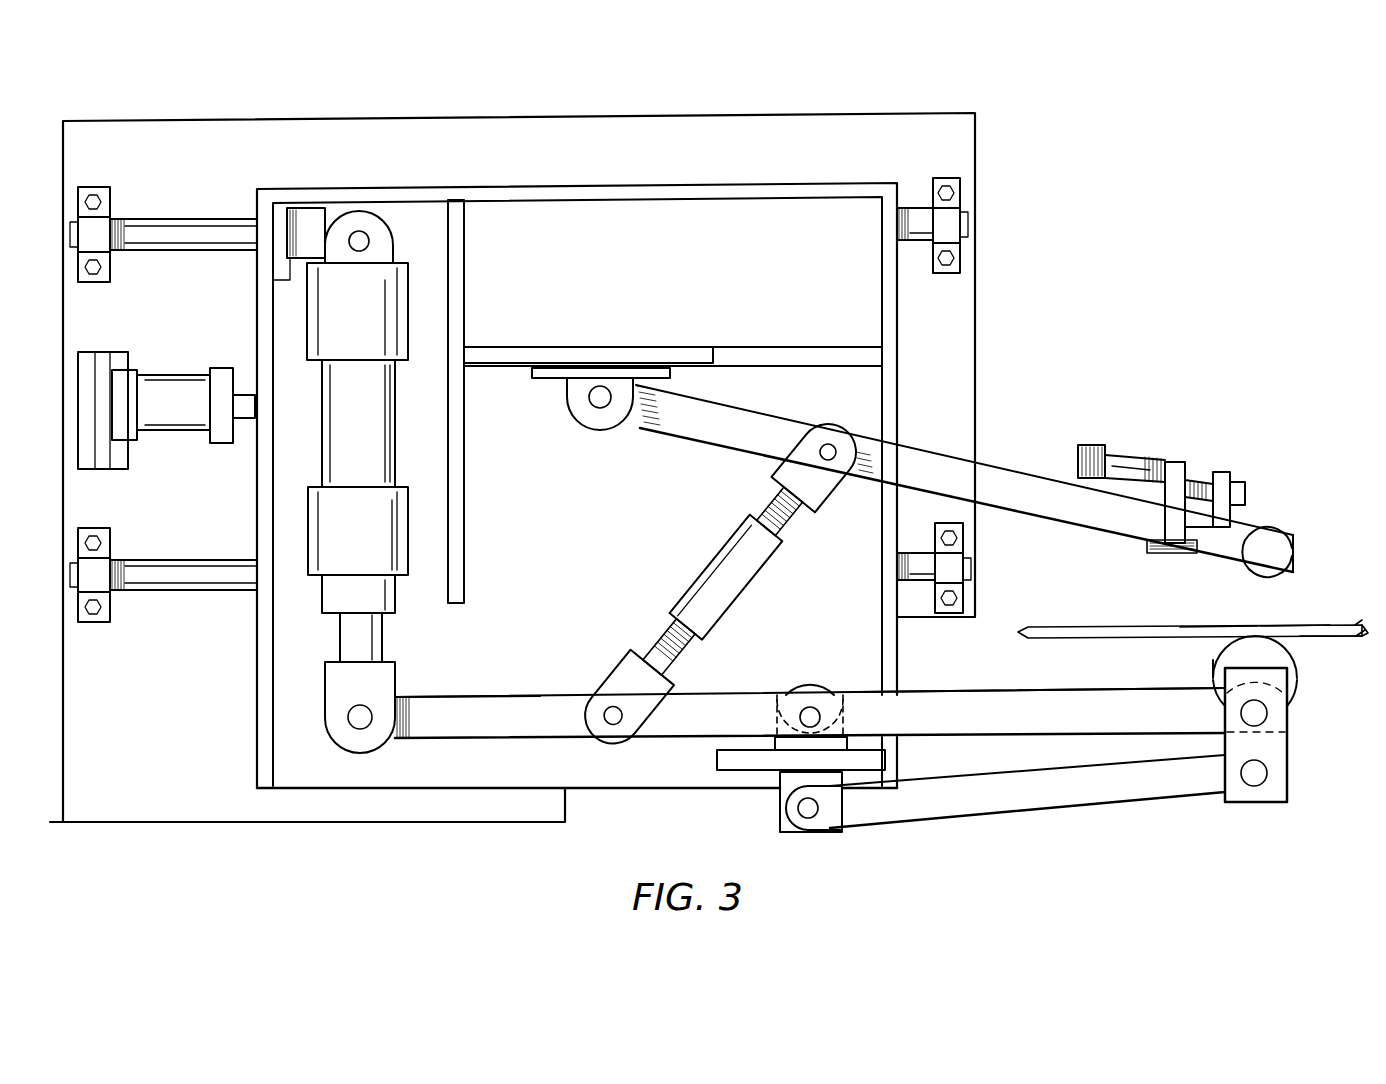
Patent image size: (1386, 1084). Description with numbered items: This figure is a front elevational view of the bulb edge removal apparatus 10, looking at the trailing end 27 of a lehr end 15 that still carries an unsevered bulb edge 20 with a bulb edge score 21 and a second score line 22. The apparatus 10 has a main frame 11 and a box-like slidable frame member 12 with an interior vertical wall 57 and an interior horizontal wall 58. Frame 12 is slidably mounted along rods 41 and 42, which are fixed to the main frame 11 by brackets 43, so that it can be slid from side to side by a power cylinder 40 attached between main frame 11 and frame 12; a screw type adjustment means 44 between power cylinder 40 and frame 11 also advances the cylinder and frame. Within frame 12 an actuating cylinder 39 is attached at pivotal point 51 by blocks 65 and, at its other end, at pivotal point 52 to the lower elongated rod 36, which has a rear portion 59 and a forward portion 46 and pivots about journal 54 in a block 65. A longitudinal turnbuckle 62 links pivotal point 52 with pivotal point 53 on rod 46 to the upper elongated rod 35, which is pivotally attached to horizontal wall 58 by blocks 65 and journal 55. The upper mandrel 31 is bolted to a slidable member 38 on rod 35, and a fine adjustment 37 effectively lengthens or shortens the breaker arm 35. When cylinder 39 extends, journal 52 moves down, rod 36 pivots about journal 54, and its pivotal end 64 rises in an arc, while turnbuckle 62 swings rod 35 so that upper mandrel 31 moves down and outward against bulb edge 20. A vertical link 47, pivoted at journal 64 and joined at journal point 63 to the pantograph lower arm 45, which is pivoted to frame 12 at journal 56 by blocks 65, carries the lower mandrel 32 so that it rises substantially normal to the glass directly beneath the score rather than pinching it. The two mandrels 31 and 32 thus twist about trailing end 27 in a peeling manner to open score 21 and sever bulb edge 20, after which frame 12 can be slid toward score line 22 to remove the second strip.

The apparatus 10 is at (1092, 345).
The main frame 11 is at (613, 113).
The frame member 12 is at (627, 208).
The lehr end 15 is at (1357, 628).
The bulb edge 20 is at (1020, 636).
The bulb edge score 21 is at (1257, 627).
The score line 22 is at (1308, 627).
The trailing end 27 is at (1347, 634).
The upper mandrel 31 is at (1273, 548).
The lower mandrel 32 is at (1230, 657).
The upper elongated rod 35 is at (1045, 482).
The lower elongated rod 36 is at (1056, 703).
The fine adjustment 37 is at (1138, 460).
The slidable member 38 is at (1248, 528).
The actuating cylinder 39 is at (357, 462).
The power cylinder 40 is at (182, 388).
The rod 41 is at (185, 228).
The rod 42 is at (190, 573).
The brackets 43 is at (101, 230).
The screw type adjustment means 44 is at (91, 355).
The pantograph lower arm 45 is at (1105, 790).
The forward portion of elongated rod 46 is at (1000, 722).
The vertical link 47 is at (1276, 790).
The pivotal point 51 is at (361, 240).
The pivotal point 52 is at (360, 720).
The pivotal point 53 is at (608, 716).
The journal 54 is at (800, 717).
The journal 55 is at (603, 393).
The journal 56 is at (805, 810).
The interior vertical wall 57 is at (466, 256).
The interior horizontal wall 58 is at (567, 347).
The rear portion 59 is at (517, 700).
The turnbuckle 62 is at (722, 562).
The journal point 63 is at (1258, 773).
The pivotal end 64 is at (1258, 712).
The blocks 65 is at (318, 215).